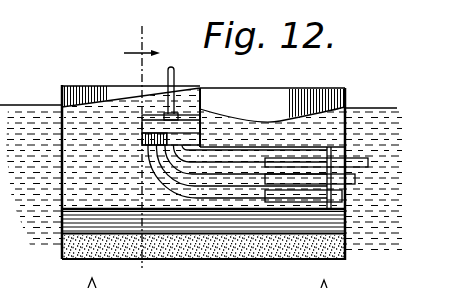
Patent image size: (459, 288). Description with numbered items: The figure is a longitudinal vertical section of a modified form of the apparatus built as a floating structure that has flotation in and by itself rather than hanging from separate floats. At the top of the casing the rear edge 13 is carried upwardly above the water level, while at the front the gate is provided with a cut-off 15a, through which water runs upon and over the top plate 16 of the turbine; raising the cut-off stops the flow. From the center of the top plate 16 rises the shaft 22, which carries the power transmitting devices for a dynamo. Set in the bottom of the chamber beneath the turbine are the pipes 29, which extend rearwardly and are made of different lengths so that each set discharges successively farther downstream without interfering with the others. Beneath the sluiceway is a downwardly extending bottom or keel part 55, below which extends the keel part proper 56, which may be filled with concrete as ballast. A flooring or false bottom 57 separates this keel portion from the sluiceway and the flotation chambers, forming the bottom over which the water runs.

The rear edge 13 is at (143, 145).
The shaft 22 is at (175, 77).
The top plate 16 is at (196, 120).
The cut-off 15a is at (138, 121).
The pipes 29 is at (268, 198).
The flooring or false bottom 57 is at (200, 211).
The bottom or keel part 55 is at (247, 224).
The keel part proper 56 is at (342, 253).